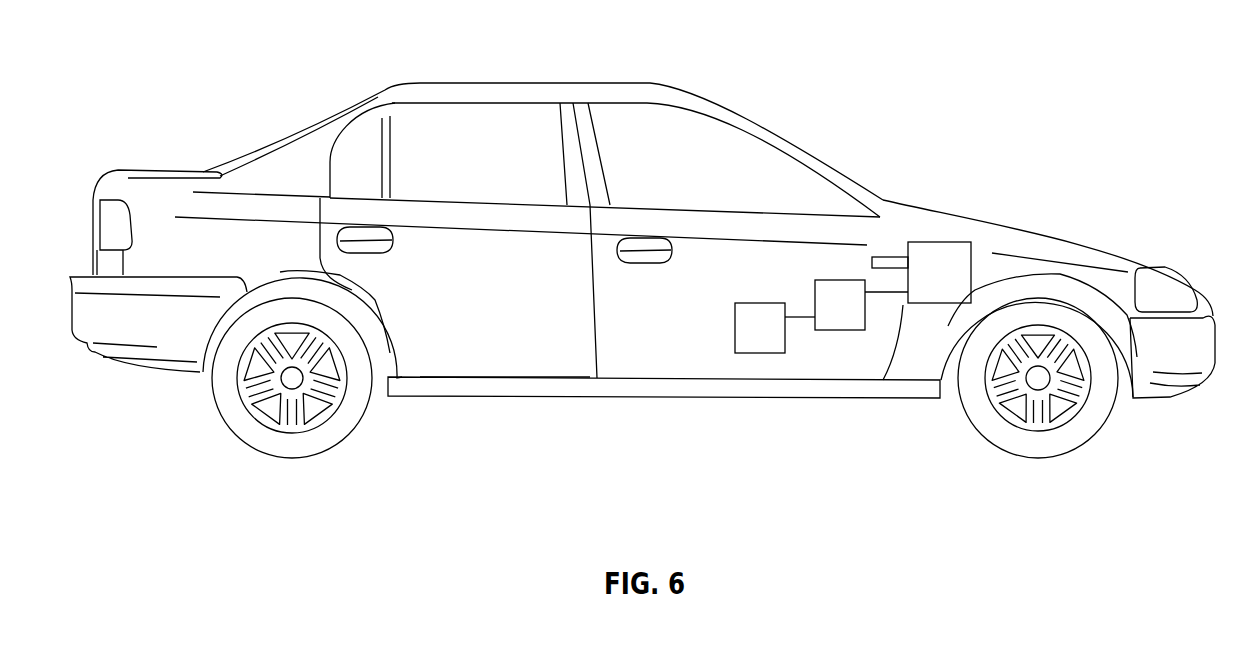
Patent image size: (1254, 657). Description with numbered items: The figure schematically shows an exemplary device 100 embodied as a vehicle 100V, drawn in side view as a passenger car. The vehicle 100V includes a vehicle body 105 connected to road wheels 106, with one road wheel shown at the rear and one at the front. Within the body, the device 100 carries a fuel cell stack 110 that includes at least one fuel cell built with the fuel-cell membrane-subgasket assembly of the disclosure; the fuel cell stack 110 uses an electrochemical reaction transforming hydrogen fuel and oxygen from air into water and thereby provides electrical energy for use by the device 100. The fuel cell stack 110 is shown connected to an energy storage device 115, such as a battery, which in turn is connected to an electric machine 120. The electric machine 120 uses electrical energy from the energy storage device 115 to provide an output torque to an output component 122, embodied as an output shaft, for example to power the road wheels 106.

The device 100 is at (520, 82).
The vehicle 100V is at (870, 69).
The vehicle body 105 is at (518, 367).
The road wheels 106 is at (347, 418).
The fuel cell stack 110 is at (782, 343).
The energy storage device 115 is at (860, 319).
The electric machine 120 is at (958, 285).
The output component 122 is at (893, 257).